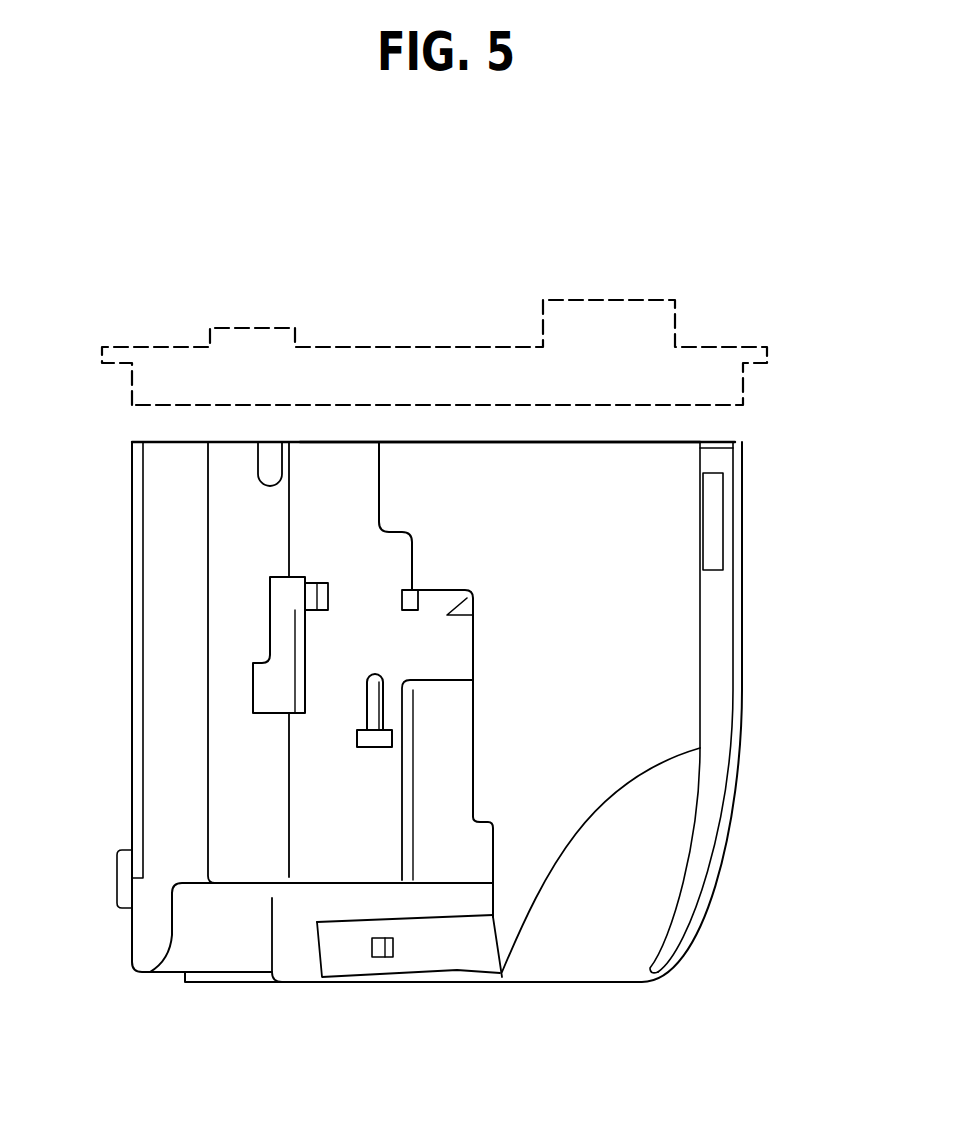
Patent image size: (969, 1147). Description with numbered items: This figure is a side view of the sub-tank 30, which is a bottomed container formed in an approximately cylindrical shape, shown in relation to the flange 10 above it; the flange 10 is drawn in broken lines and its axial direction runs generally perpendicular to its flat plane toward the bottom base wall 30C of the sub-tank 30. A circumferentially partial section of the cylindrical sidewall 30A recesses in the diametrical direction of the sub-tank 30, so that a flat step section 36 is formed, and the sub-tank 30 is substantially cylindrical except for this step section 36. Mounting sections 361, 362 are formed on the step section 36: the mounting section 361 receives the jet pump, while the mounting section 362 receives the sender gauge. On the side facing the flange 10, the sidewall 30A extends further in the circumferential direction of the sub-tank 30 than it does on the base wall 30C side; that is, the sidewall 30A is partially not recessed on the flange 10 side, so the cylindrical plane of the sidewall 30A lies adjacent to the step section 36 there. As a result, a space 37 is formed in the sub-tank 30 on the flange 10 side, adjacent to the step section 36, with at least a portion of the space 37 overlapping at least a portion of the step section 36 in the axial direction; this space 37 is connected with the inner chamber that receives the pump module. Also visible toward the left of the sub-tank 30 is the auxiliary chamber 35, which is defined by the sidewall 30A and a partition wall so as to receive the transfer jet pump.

The flange 10 is at (755, 347).
The sub-tank 30 is at (752, 590).
The sidewall 30A is at (555, 450).
The bottom base wall 30C is at (568, 982).
The auxiliary chamber 35 is at (193, 482).
The step section 36 is at (333, 760).
The mounting section 361 is at (255, 690).
The mounting section 362 is at (373, 748).
The space 37 is at (400, 490).